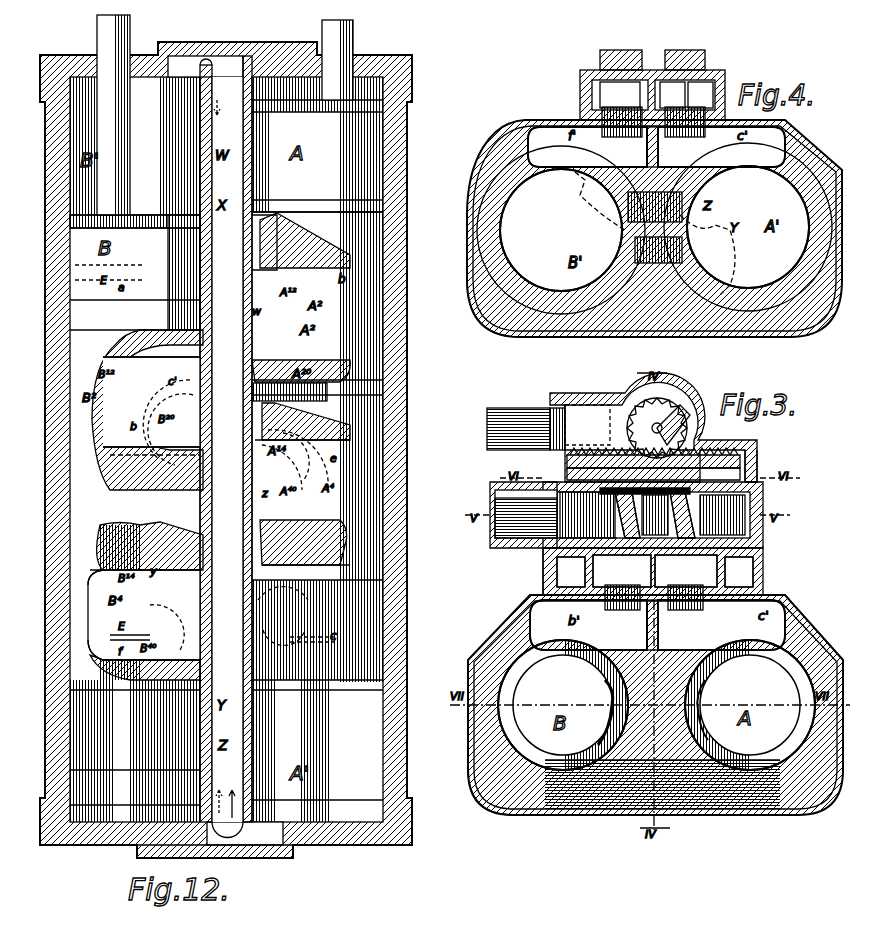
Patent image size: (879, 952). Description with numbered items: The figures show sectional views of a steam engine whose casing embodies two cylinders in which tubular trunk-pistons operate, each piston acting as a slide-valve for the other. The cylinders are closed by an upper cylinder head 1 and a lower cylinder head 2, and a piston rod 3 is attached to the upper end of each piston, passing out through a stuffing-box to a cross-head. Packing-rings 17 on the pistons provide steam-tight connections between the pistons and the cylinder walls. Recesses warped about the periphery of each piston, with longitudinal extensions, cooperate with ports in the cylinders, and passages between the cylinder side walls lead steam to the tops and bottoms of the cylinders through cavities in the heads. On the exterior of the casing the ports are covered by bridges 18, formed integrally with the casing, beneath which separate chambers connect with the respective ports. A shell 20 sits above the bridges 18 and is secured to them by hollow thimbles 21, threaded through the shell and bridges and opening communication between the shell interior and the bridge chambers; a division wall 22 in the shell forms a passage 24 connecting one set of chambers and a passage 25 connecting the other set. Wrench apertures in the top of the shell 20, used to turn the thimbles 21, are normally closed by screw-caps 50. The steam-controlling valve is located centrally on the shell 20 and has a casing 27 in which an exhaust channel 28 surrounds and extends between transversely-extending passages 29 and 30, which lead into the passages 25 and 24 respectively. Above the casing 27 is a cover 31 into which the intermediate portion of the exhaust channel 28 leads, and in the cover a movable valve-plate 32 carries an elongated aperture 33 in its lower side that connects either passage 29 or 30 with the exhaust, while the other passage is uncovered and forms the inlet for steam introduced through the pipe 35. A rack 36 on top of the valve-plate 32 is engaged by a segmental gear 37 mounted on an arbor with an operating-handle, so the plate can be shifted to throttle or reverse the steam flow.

In FIG. 12, the cylinder head 1 is at (405, 58).
In FIG. 12, the cylinder head 2 is at (365, 845).
In FIG. 4, the cylinder head 2 is at (497, 305).
In FIG. 3, the cylinder head 2 is at (510, 790).
In FIG. 12, the piston rod 3 is at (337, 60).
In FIG. 12, the packing-rings 17 is at (340, 210).
In FIG. 4, the bridges 18 is at (540, 122).
In FIG. 3, the bridges 18 is at (785, 610).
In FIG. 4, the shell 20 is at (722, 75).
In FIG. 3, the shell 20 is at (543, 570).
In FIG. 4, the hollow thimbles 21 is at (685, 130).
In FIG. 3, the hollow thimbles 21 is at (680, 615).
In FIG. 4, the division wall 22 is at (672, 95).
In FIG. 4, the passage 24 is at (700, 95).
In FIG. 3, the passage 24 is at (673, 571).
In FIG. 4, the passage 25 is at (620, 95).
In FIG. 3, the passage 25 is at (637, 571).
In FIG. 3, the casing 27 is at (763, 540).
In FIG. 3, the exhaust channel 28 is at (655, 515).
In FIG. 3, the transversely-extending passage 29 is at (626, 516).
In FIG. 3, the transversely-extending passage 30 is at (682, 521).
In FIG. 3, the cover 31 is at (750, 462).
In FIG. 3, the valve-plate 32 is at (730, 455).
In FIG. 3, the elongated aperture 33 is at (722, 515).
In FIG. 3, the pipe 35 is at (515, 412).
In FIG. 3, the rack 36 is at (700, 440).
In FIG. 3, the segmental gear 37 is at (670, 410).
In FIG. 4, the screw-caps 50 is at (672, 52).